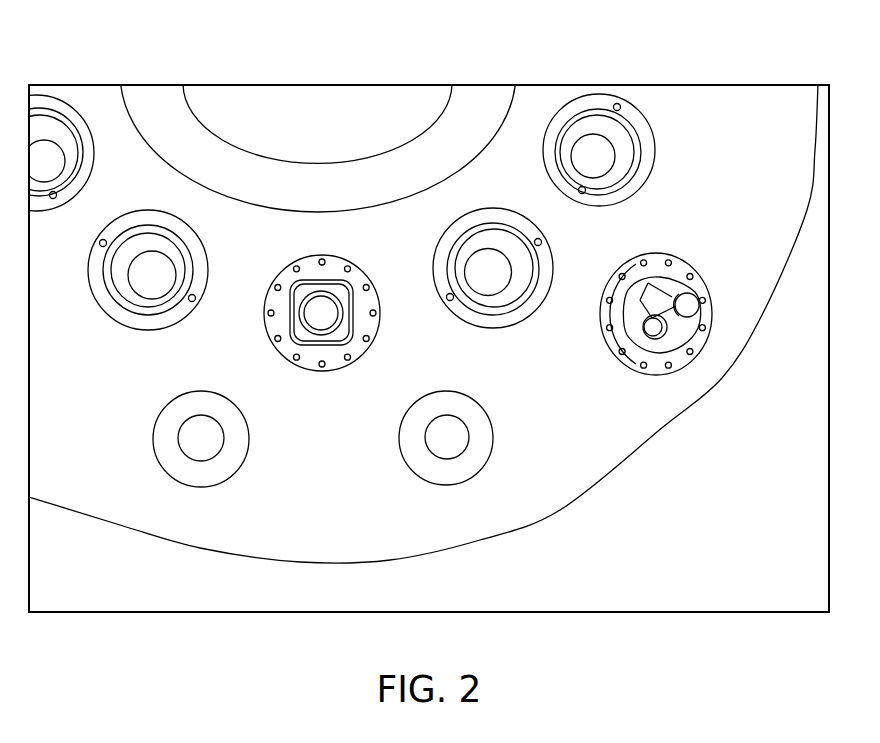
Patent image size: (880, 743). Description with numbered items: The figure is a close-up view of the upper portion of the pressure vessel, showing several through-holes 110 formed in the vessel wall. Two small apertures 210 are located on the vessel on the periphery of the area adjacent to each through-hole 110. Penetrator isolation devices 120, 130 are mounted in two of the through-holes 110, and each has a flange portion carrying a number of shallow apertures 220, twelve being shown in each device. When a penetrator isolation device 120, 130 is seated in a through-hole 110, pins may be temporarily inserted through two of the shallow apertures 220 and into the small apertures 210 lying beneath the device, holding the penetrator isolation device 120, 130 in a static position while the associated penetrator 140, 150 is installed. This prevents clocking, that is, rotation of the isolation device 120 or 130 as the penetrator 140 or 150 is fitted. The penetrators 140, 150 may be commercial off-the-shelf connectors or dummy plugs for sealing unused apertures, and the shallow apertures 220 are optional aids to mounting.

The through-hole 110 is at (122, 295).
The penetrator isolation device 120 is at (308, 263).
The penetrator isolation device 130 is at (653, 260).
The penetrator 140 is at (325, 302).
The penetrator 150 is at (697, 323).
The small aperture 210 is at (192, 295).
The shallow aperture 220 is at (278, 342).